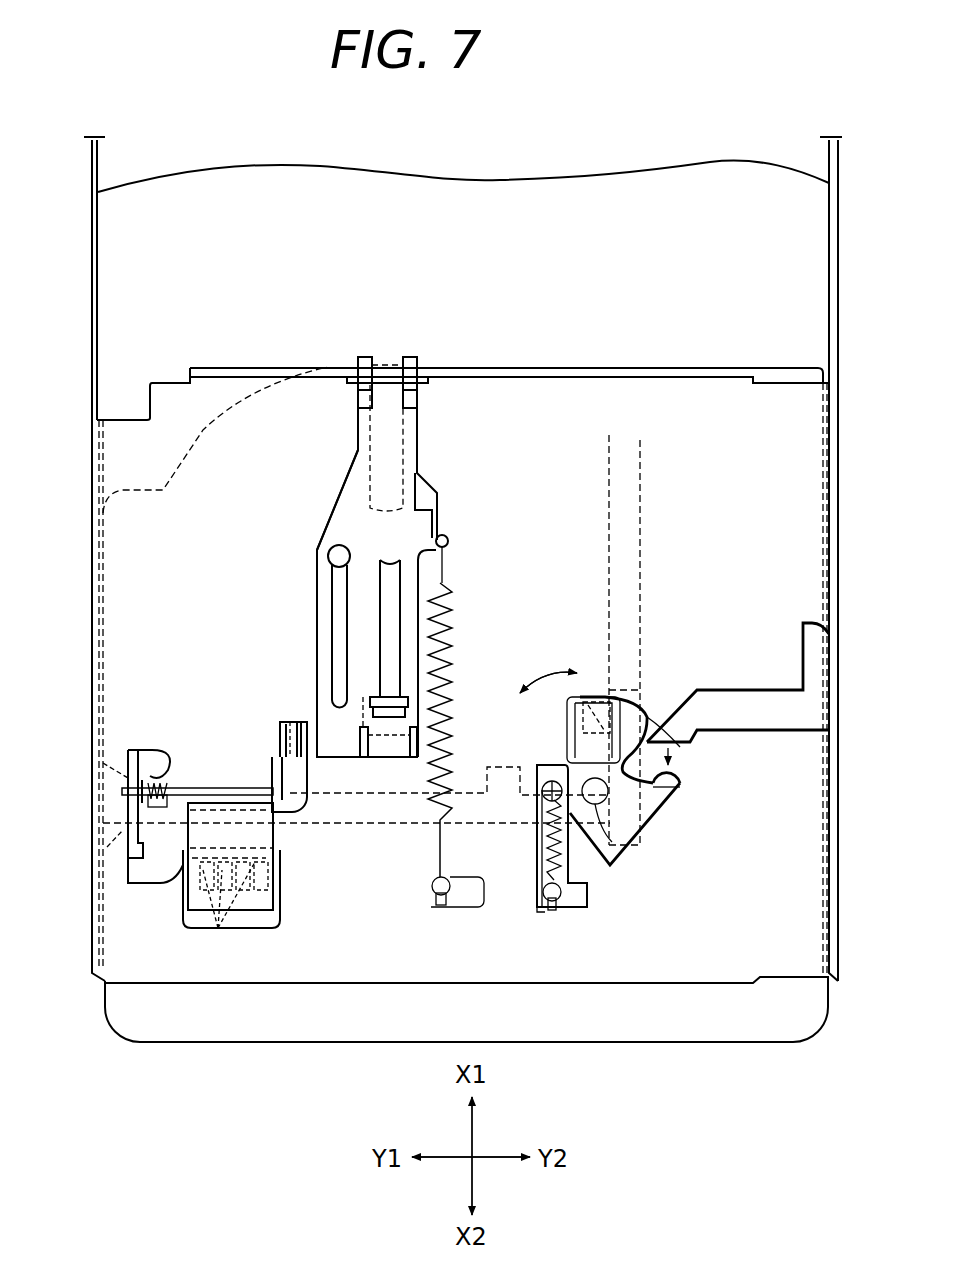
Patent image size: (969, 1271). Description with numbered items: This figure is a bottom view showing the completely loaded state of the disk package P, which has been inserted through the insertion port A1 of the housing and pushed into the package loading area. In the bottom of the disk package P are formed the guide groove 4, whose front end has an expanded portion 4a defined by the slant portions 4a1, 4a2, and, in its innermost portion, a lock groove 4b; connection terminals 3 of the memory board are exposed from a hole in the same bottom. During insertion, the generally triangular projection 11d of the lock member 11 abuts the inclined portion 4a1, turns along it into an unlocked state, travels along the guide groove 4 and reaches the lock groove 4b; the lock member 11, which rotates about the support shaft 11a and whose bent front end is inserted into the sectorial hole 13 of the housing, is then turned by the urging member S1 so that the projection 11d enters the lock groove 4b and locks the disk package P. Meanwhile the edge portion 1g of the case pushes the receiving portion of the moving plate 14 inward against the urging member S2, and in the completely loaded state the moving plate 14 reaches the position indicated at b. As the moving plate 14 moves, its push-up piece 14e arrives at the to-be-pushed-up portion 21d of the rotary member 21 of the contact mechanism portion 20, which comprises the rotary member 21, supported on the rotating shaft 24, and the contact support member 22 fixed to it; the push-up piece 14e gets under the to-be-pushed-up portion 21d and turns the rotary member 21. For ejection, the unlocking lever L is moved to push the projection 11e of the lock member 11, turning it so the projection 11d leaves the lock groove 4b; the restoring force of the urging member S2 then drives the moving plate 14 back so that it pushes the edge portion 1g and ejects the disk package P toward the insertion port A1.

The edge portion 1g is at (463, 368).
The slant portion 4a1 is at (609, 435).
The slant portion 4a2 is at (640, 440).
The expanded portion 4a is at (618, 387).
The guide groove 4 is at (641, 470).
The position of moving plate b is at (347, 498).
The moving plate 14 is at (340, 538).
The push-up piece 14e is at (307, 780).
The to-be-pushed-up portion 21d is at (288, 720).
The urging member S2 is at (450, 647).
The lock groove 4b is at (567, 728).
The lock member 11 is at (653, 817).
The projection 11d is at (610, 693).
The projection 11e is at (680, 778).
The support shaft 11a is at (620, 857).
The urging member S1 is at (537, 837).
The sectorial hole 13 is at (693, 742).
The unlocking lever L is at (763, 697).
The rotary member 21 is at (147, 830).
The rotating shaft 24 is at (200, 748).
The contact support member 22 is at (265, 900).
The connection terminals 3 is at (231, 908).
The contact mechanism portion 20 is at (180, 903).
The disk package P is at (224, 1043).
The insertion port A1 is at (377, 987).